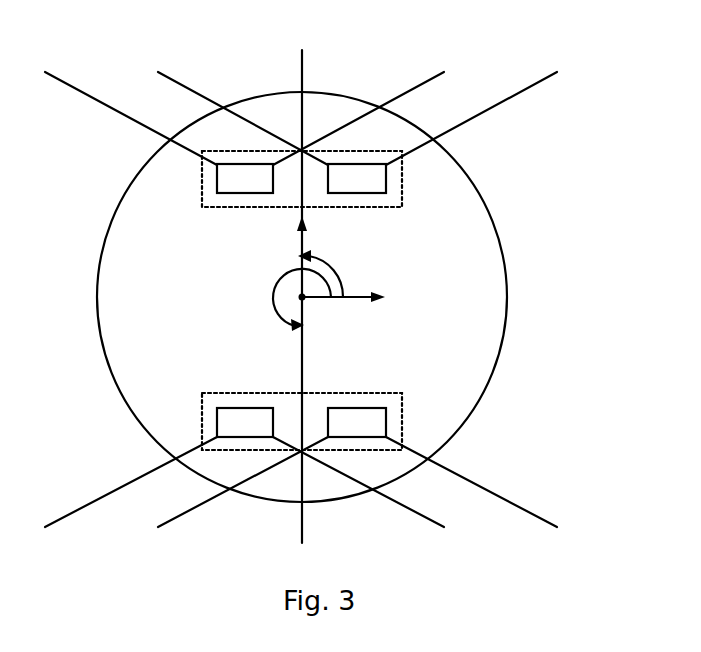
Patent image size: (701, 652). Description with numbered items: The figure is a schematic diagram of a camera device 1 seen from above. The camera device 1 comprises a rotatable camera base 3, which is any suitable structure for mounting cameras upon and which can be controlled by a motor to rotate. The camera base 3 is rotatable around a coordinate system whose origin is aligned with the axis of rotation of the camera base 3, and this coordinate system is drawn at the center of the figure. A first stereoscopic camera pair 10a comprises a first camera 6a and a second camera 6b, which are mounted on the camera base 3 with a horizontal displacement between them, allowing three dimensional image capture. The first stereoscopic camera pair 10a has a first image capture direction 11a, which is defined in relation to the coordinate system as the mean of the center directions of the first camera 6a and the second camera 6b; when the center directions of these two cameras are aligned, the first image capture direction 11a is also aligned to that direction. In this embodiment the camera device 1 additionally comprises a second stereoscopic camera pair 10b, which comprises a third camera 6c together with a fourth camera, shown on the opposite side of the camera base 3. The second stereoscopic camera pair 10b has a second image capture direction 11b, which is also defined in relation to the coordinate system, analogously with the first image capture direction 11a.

The camera device 1 is at (162, 36).
The camera base 3 is at (507, 288).
The first camera 6a is at (217, 177).
The second camera 6b is at (386, 180).
The third camera 6c is at (247, 408).
The first stereoscopic camera pair 10a is at (373, 207).
The second stereoscopic camera pair 10b is at (402, 410).
The first image capture direction 11a is at (336, 269).
The second image capture direction 11b is at (275, 282).